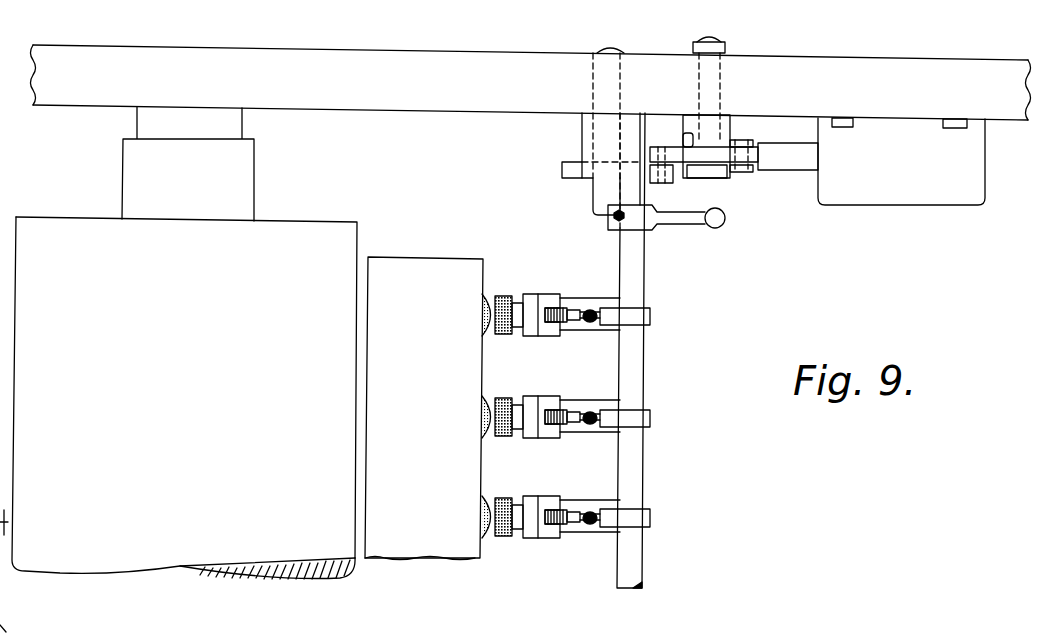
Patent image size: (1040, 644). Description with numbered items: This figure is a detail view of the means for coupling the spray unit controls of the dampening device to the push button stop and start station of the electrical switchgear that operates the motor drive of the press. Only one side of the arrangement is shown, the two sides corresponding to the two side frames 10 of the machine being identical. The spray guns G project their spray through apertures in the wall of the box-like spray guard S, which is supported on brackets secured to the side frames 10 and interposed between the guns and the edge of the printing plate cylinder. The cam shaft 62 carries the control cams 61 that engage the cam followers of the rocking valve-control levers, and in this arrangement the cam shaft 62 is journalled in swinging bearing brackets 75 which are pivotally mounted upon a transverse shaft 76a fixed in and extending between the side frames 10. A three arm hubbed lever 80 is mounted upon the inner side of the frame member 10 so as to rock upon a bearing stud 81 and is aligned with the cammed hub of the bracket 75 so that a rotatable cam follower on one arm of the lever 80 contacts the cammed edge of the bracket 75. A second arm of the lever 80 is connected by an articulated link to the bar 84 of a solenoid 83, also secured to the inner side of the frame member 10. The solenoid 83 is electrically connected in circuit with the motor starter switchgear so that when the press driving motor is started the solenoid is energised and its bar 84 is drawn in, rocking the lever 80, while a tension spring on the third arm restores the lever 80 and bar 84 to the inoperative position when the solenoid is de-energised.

The side frame 10 is at (815, 77).
The spray guard S is at (430, 543).
The gun G is at (586, 335).
The cam shaft 62 is at (647, 377).
The control cam 61 is at (652, 318).
The transverse shaft 76a is at (613, 50).
The bearing stud 81 is at (708, 80).
The swinging bearing bracket 75 is at (580, 189).
The solenoid bar 84 is at (792, 160).
The three arm hubbed lever 80 is at (707, 142).
The solenoid 83 is at (915, 183).